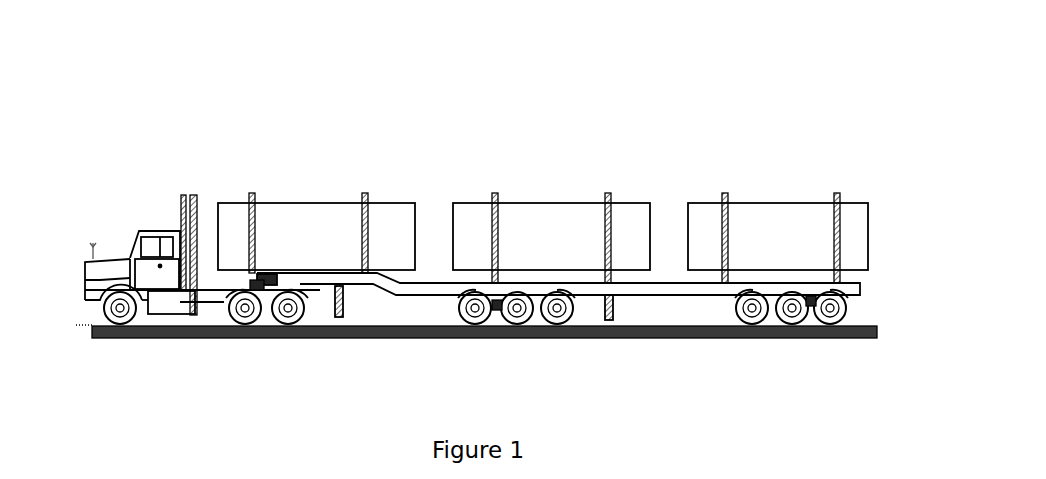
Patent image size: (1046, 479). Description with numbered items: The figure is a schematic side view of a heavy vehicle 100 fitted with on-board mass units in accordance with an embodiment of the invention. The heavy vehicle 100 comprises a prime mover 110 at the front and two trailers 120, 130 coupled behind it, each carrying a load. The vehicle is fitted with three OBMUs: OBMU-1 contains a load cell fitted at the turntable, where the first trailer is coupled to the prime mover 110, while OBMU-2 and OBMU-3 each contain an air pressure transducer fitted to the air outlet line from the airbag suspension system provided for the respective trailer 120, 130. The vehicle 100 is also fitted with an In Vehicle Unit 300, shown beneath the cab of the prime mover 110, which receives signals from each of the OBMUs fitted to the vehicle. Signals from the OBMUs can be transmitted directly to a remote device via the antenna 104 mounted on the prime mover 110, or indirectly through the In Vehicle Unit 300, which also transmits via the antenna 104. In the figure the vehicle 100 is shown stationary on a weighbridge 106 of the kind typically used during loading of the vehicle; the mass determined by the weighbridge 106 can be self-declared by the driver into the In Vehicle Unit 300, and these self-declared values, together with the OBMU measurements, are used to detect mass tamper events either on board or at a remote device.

The heavy vehicle 100 is at (678, 68).
The antenna 104 is at (88, 220).
The weighbridge 106 is at (688, 338).
The prime mover 110 is at (148, 255).
The trailer 120 is at (399, 316).
The trailer 130 is at (666, 266).
The In Vehicle Unit (IVU) 300 is at (166, 307).
The on-board mass unit OBMU-1 is at (248, 277).
The on-board mass unit OBMU-2 is at (488, 296).
The on-board mass unit OBMU-3 is at (819, 287).